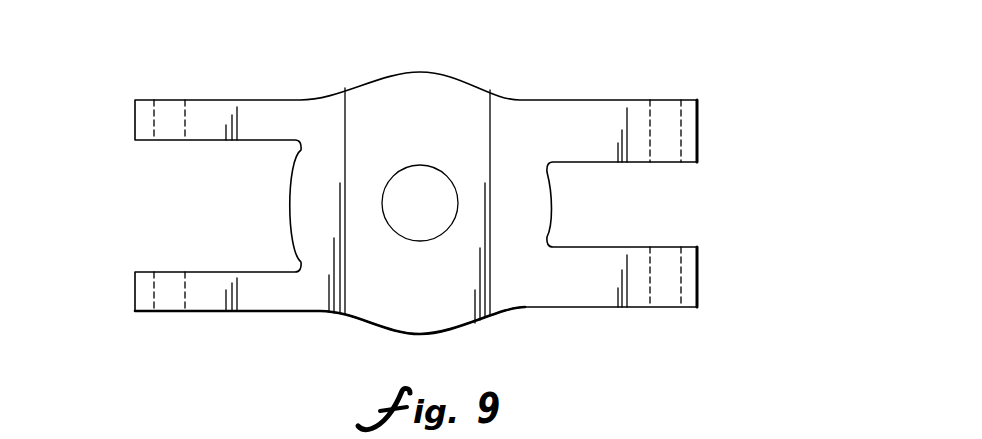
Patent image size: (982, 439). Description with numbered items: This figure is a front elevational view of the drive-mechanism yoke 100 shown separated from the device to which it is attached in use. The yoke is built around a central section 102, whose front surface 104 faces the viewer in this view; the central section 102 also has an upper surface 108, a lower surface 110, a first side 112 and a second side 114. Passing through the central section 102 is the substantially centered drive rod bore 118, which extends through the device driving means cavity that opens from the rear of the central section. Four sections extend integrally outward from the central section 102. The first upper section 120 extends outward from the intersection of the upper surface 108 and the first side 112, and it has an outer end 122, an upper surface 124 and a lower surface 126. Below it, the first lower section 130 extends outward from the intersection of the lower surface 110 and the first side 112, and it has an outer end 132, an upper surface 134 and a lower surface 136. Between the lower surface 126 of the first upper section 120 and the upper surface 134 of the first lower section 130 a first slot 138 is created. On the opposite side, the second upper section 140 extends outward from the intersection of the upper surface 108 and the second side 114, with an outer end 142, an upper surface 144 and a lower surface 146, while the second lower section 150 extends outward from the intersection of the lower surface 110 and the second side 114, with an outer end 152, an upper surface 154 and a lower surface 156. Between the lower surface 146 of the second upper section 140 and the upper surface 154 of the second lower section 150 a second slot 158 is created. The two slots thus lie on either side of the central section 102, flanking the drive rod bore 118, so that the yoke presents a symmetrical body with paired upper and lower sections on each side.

The drive-mechanism yoke 100 is at (731, 47).
The central section 102 is at (427, 87).
The front surface 104 is at (455, 60).
The upper surface 108 is at (404, 72).
The lower surface 110 is at (475, 322).
The first side 112 is at (290, 227).
The second side 114 is at (549, 180).
The drive rod bore 118 is at (400, 225).
The first upper section 120 is at (268, 112).
The outer end 122 is at (135, 120).
The upper surface 124 is at (205, 100).
The lower surface 126 is at (205, 140).
The first lower section 130 is at (220, 290).
The outer end 132 is at (135, 292).
The upper surface 134 is at (205, 272).
The lower surface 136 is at (270, 311).
The first slot 138 is at (185, 208).
The second upper section 140 is at (565, 115).
The outer end 142 is at (700, 122).
The upper surface 144 is at (690, 100).
The lower surface 146 is at (690, 165).
The second lower section 150 is at (555, 290).
The outer end 152 is at (697, 275).
The upper surface 154 is at (693, 247).
The lower surface 156 is at (695, 307).
The second slot 158 is at (631, 211).